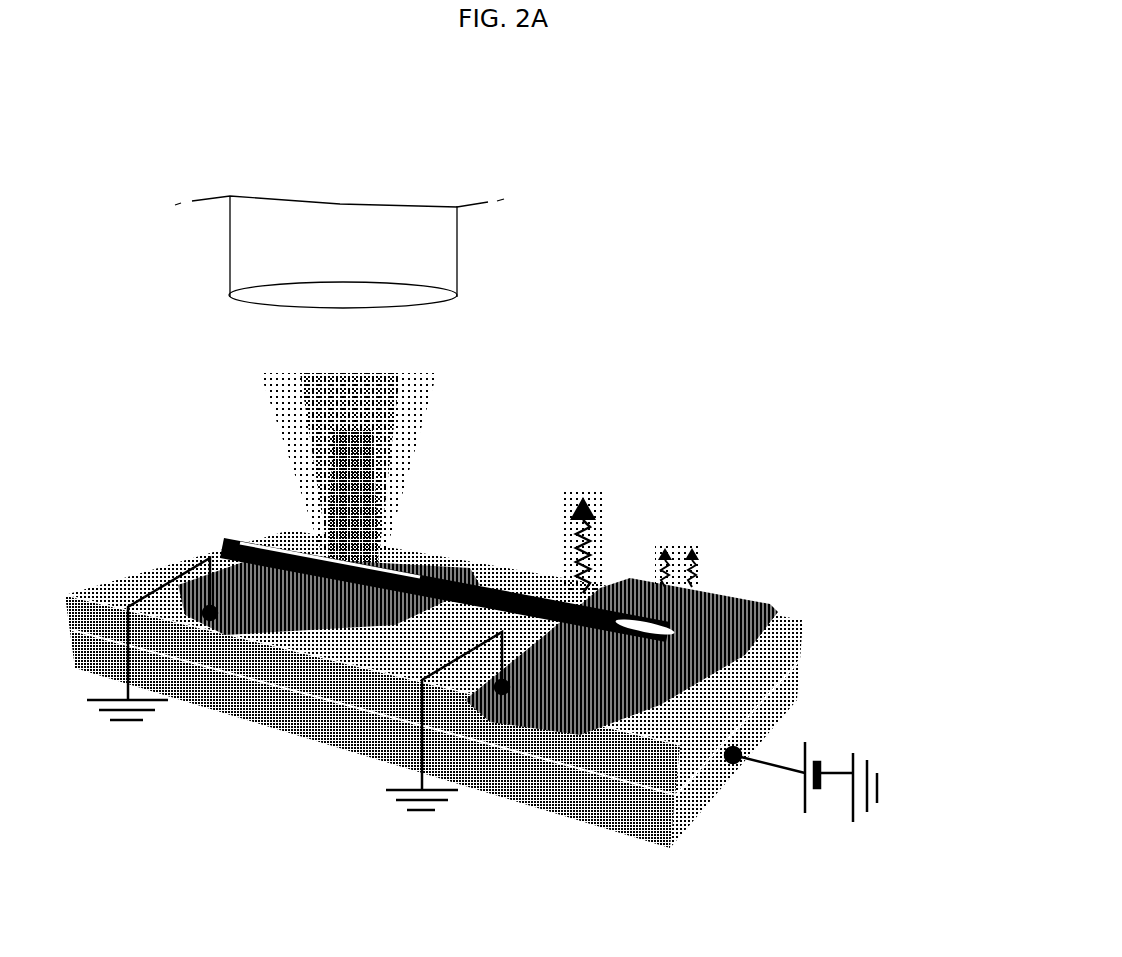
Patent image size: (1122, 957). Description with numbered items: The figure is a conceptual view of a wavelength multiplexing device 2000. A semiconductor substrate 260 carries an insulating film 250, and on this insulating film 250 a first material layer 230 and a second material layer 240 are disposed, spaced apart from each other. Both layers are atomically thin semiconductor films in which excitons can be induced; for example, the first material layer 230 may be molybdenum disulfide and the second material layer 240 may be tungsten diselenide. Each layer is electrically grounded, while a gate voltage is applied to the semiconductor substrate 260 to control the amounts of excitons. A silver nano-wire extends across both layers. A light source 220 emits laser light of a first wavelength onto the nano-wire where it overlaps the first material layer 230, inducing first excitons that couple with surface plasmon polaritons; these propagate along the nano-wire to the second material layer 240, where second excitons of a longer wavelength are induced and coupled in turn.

The wavelength multiplexing device 2000 is at (535, 134).
The light source 220 is at (445, 257).
The first material layer 230 is at (242, 650).
The second material layer 240 is at (582, 738).
The insulating film 250 is at (780, 622).
The semiconductor substrate 260 is at (795, 687).